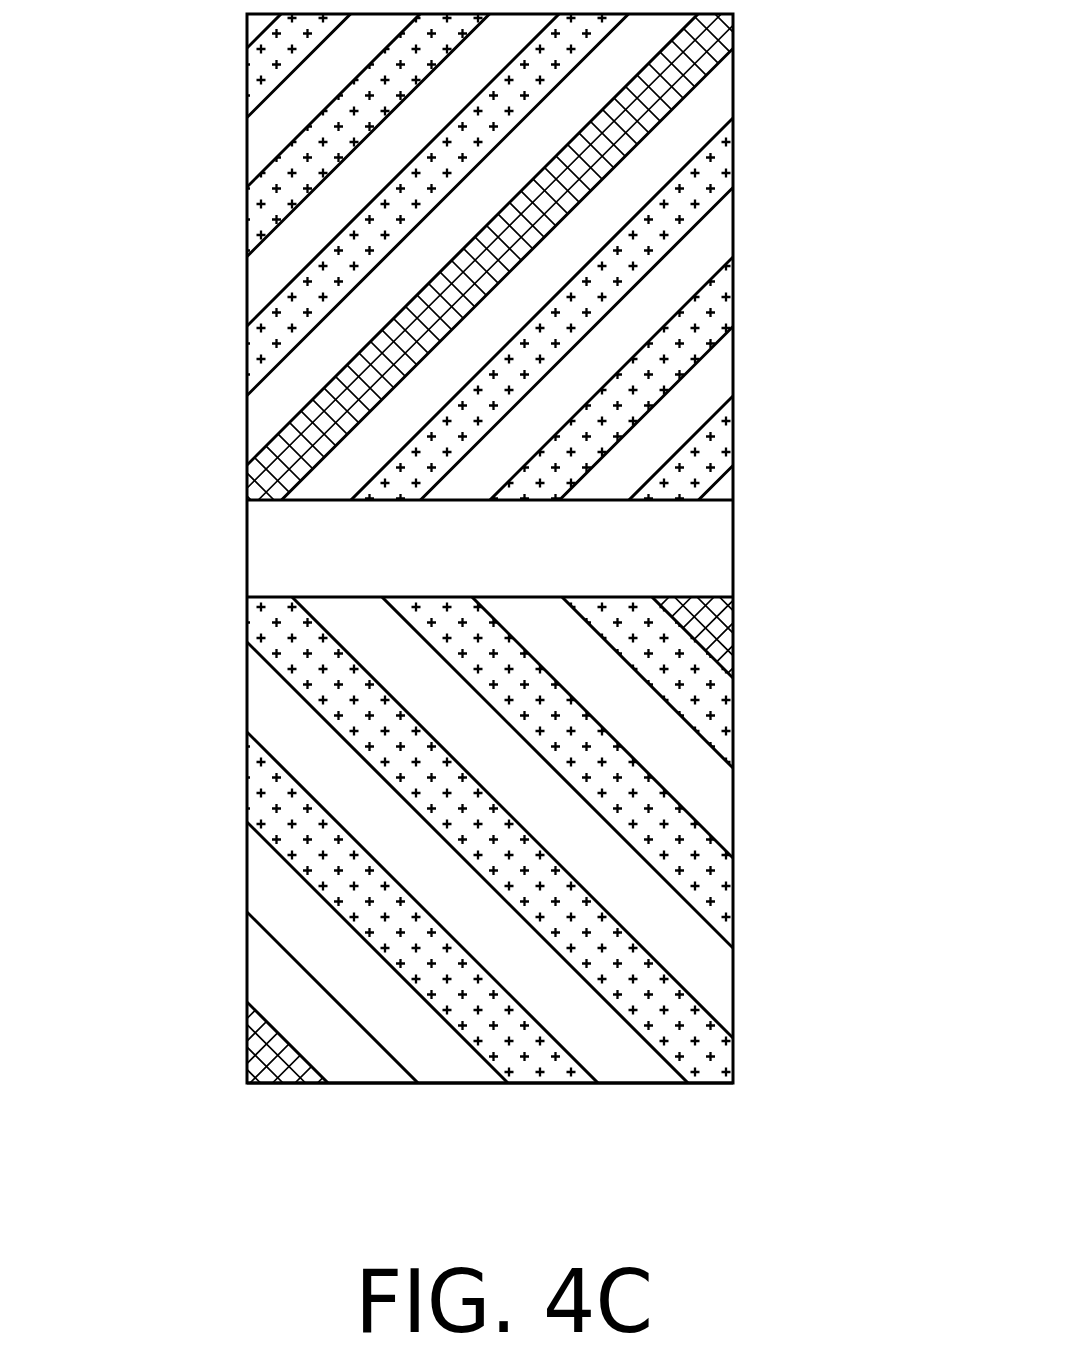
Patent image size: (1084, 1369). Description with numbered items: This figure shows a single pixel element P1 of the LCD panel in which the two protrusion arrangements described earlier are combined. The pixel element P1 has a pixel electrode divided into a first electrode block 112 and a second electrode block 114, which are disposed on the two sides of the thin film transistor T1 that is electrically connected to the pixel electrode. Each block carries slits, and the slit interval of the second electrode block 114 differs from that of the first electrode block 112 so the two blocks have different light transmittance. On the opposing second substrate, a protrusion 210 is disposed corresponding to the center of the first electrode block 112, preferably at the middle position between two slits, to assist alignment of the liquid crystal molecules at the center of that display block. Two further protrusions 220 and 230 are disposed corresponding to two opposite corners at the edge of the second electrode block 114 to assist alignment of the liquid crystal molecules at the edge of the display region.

The protrusion 210 is at (736, 15).
The first electrode block 112 is at (736, 168).
The protrusion 220 is at (736, 612).
The second electrode block 114 is at (736, 800).
The protrusion 230 is at (246, 1039).
The thin film transistor T1 is at (490, 548).
The pixel element P1 is at (541, 1085).